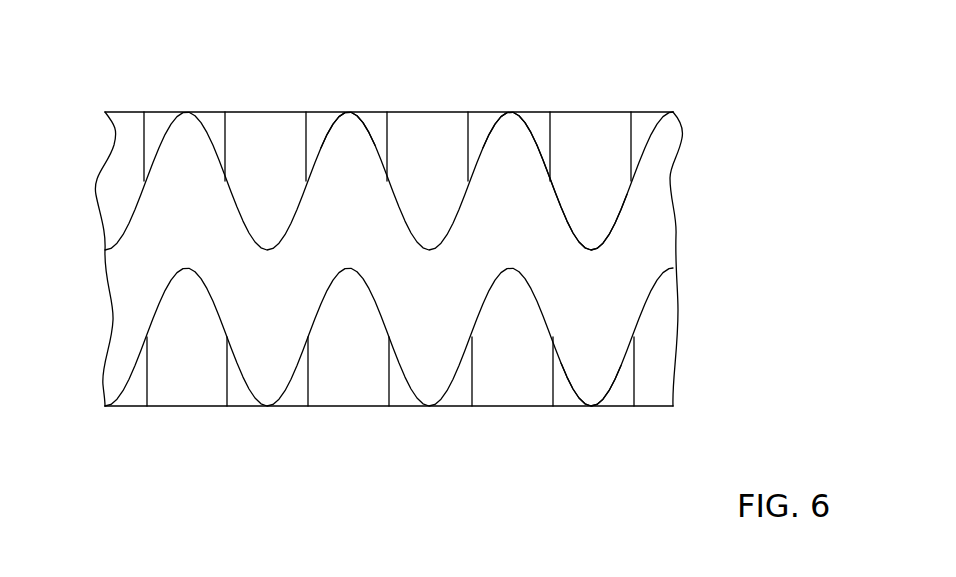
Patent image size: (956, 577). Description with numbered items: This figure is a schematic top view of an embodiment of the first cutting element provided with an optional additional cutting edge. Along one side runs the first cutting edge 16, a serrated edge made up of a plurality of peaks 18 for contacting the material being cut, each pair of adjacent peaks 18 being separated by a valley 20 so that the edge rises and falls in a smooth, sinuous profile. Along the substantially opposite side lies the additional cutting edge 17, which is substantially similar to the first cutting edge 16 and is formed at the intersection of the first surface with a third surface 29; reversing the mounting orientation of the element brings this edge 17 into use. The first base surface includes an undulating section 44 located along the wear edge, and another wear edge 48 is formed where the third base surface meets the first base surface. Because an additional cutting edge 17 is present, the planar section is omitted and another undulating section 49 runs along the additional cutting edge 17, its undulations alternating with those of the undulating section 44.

The first cutting edge 16 is at (367, 406).
The additional cutting edge 17 is at (590, 112).
The peaks 18 is at (180, 128).
The valley 20 is at (272, 143).
The third surface 29 is at (344, 112).
The undulating section 44 is at (593, 367).
The wear edge 48 is at (504, 112).
The another undulating section 49 is at (535, 193).